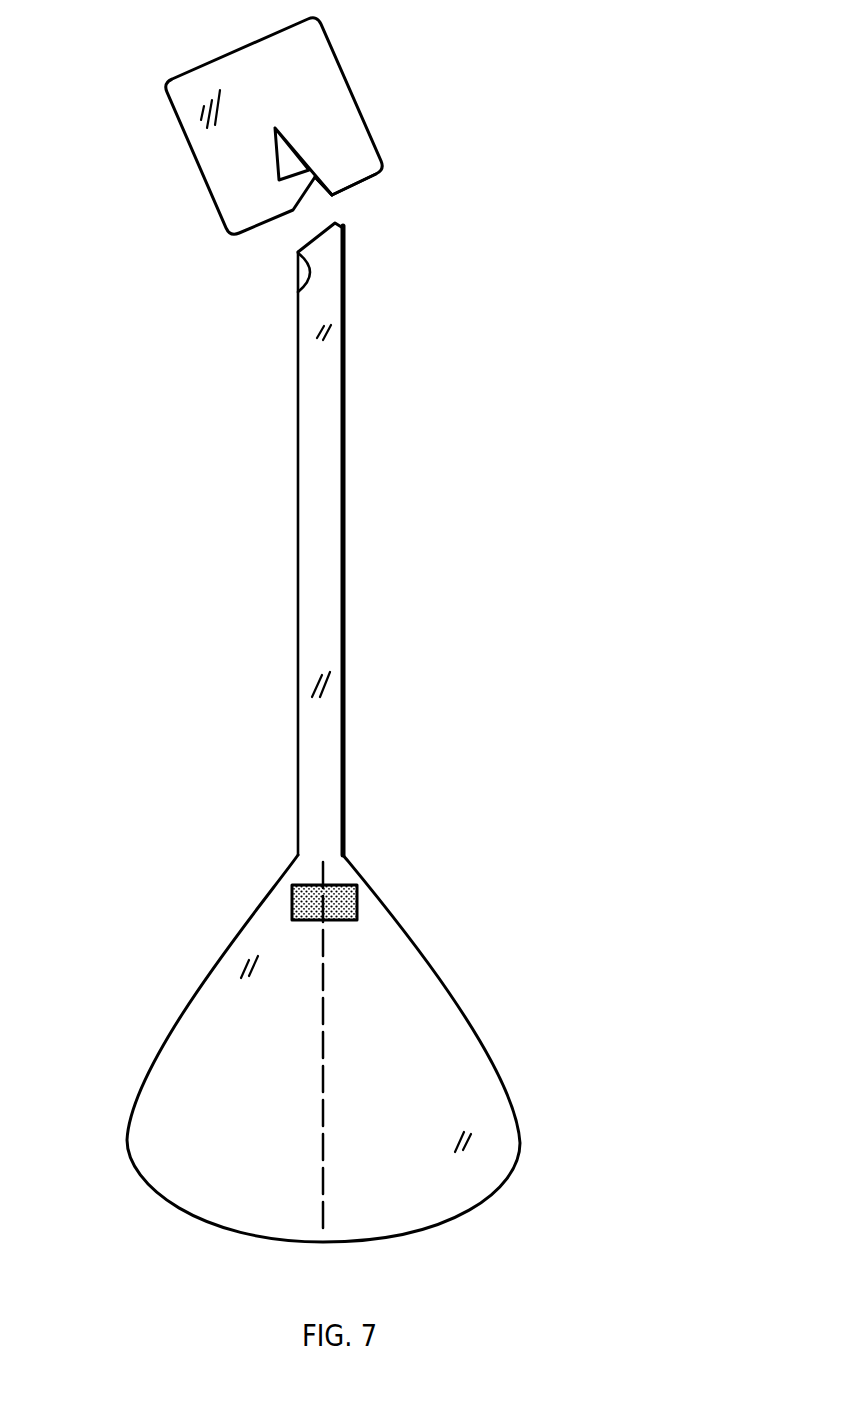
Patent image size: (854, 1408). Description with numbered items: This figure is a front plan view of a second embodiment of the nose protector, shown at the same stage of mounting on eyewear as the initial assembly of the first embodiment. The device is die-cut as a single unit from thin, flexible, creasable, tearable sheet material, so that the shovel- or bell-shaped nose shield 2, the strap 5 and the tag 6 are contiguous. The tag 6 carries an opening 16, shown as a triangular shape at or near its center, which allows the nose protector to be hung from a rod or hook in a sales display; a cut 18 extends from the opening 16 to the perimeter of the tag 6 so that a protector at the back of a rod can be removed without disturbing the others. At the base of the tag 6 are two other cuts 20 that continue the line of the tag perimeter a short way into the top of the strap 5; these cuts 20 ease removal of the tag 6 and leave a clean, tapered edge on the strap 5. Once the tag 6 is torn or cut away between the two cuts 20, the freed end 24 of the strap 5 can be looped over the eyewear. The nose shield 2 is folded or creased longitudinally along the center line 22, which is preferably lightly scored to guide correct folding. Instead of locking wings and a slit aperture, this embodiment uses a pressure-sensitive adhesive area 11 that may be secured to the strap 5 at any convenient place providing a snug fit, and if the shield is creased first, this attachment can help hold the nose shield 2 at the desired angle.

The nose shield 2 is at (423, 1067).
The strap 5 is at (320, 461).
The tag 6 is at (298, 90).
The pressure-sensitive adhesive area 11 is at (347, 887).
The opening 16 is at (288, 146).
The cut 18 is at (313, 168).
The cuts 20 is at (303, 290).
The center line 22 is at (323, 1014).
The end 24 is at (315, 235).